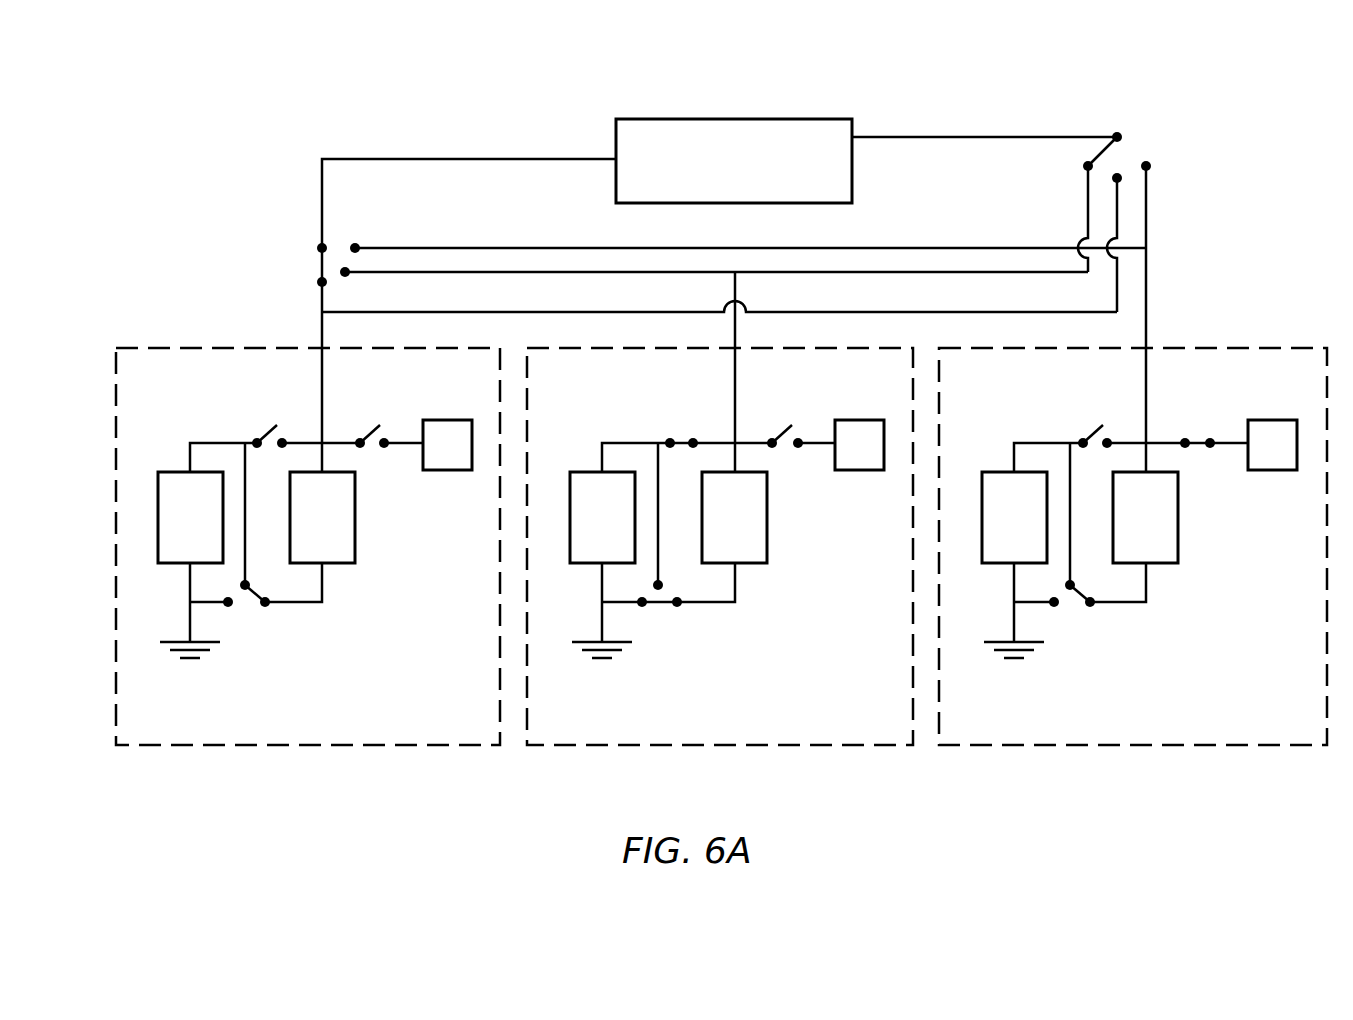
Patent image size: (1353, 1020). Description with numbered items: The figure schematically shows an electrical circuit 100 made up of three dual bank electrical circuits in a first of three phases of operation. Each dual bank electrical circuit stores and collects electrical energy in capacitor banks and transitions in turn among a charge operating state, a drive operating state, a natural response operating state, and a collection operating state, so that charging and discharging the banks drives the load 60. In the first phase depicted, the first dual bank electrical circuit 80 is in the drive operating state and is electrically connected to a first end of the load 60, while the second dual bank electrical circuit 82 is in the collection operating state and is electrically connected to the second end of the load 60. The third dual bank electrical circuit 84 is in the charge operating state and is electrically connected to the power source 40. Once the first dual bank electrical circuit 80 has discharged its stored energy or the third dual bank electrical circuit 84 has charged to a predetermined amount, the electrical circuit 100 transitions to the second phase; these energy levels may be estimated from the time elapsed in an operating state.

The load 60 is at (749, 119).
The electrical circuit 100 is at (1232, 138).
The first dual bank electrical circuit 80 is at (193, 348).
The second dual bank electrical circuit 82 is at (832, 748).
The third dual bank electrical circuit 84 is at (1245, 348).
The power source 40 is at (443, 470).